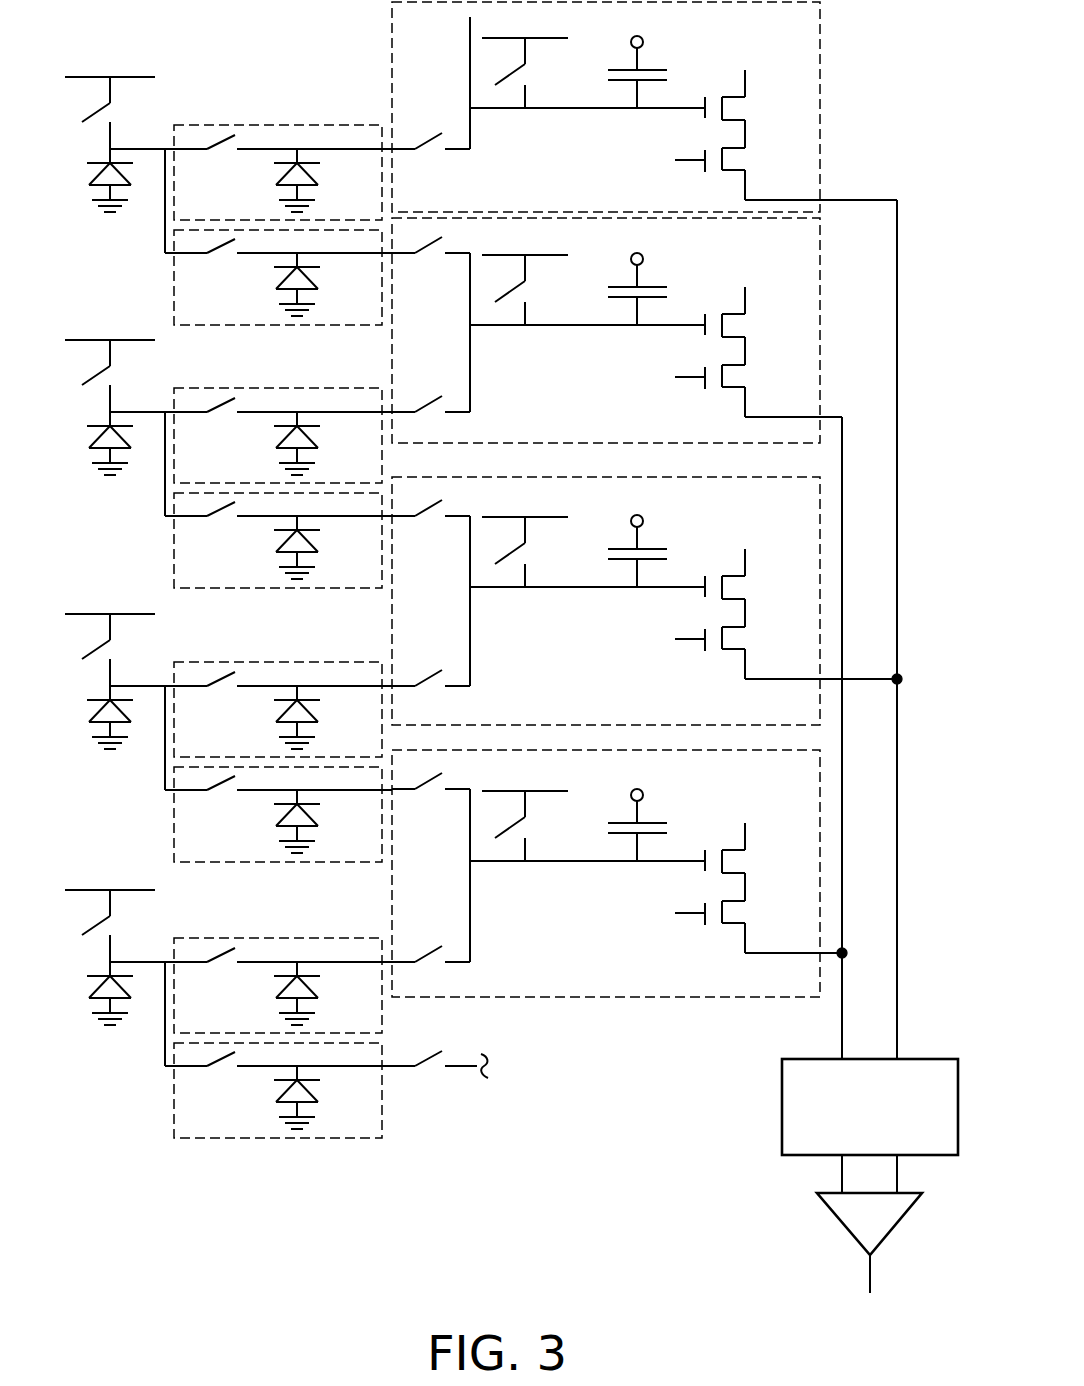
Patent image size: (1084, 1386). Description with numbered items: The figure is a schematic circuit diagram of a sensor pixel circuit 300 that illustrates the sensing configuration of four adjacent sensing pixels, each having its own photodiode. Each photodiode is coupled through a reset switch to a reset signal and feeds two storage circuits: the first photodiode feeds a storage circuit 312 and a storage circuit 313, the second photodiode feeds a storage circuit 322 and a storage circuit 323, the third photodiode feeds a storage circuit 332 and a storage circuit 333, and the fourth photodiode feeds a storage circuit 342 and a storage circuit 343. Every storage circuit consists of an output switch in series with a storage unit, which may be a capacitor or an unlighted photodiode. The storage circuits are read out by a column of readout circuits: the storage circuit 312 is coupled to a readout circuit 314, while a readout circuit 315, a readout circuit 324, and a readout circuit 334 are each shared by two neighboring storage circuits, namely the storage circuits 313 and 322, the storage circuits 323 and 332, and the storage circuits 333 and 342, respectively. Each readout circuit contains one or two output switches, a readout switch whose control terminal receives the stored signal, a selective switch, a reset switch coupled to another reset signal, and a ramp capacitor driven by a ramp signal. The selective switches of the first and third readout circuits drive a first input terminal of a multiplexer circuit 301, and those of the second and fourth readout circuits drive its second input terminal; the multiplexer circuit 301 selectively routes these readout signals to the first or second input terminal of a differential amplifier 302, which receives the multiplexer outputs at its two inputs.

The sensor pixel circuit 300 is at (501, 662).
The multiplexer circuit 301 is at (782, 1107).
The differential amplifier 302 is at (843, 1228).
The storage circuit 312 is at (276, 124).
The storage circuit 313 is at (174, 283).
The readout circuit 314 is at (392, 40).
The readout circuit 315 is at (392, 357).
The storage circuit 322 is at (283, 410).
The storage circuit 323 is at (253, 540).
The readout circuit 324 is at (392, 619).
The storage circuit 332 is at (283, 684).
The storage circuit 333 is at (253, 814).
The readout circuit 334 is at (392, 894).
The storage circuit 342 is at (283, 960).
The storage circuit 343 is at (253, 1090).